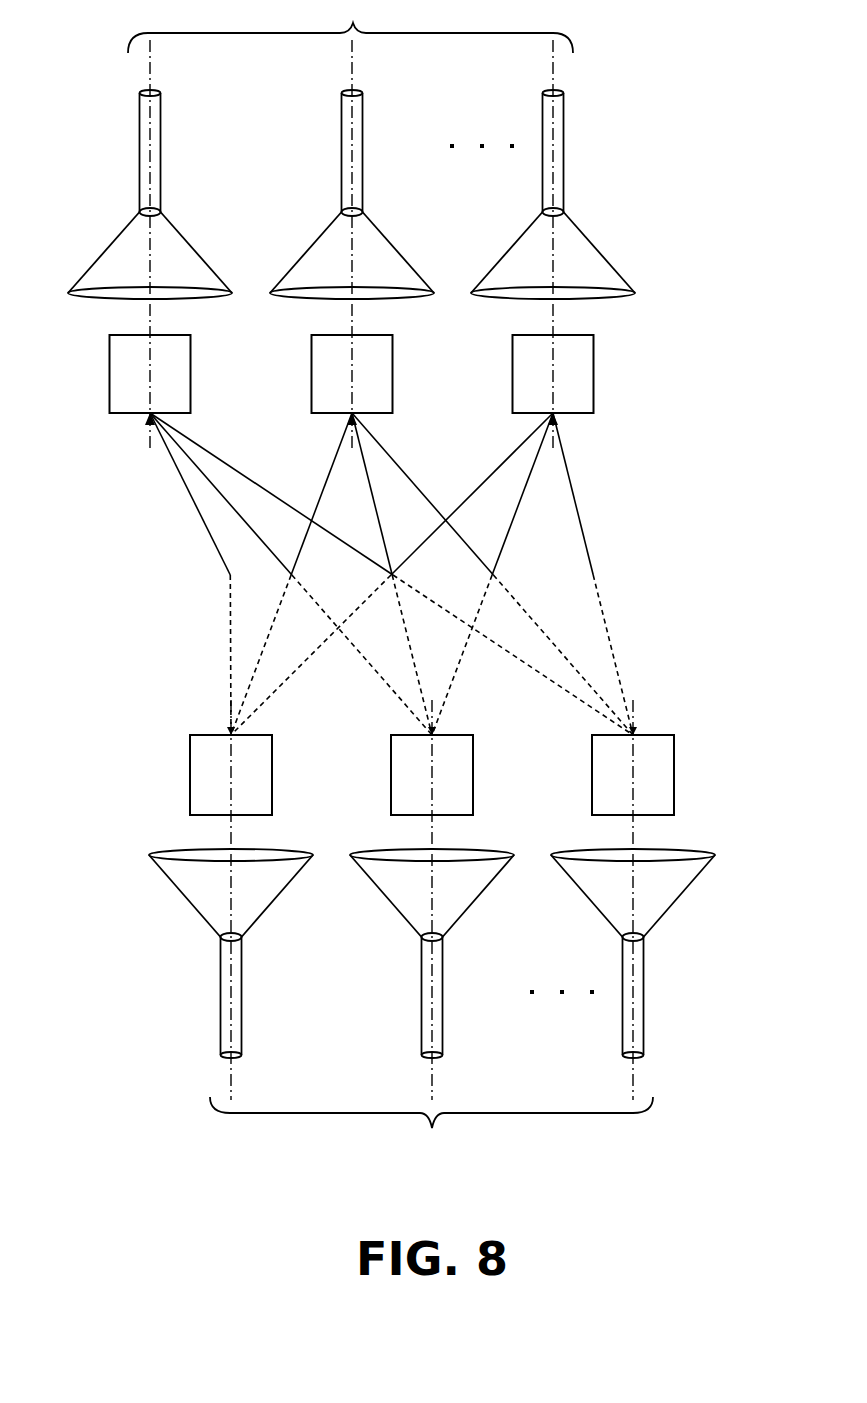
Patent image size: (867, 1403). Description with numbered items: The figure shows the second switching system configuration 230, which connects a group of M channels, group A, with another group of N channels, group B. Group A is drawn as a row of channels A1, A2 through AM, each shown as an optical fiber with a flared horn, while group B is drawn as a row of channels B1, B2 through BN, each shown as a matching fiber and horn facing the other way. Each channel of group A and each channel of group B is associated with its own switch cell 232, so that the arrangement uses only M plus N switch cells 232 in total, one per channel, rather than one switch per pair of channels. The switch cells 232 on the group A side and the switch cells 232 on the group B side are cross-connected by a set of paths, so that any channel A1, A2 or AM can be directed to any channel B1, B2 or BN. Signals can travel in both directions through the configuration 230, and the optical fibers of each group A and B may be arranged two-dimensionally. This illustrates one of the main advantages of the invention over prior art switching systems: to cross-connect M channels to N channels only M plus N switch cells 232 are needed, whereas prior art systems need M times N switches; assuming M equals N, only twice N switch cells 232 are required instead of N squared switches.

The second switching system configuration 230 is at (673, 387).
The switch cell 232 is at (109, 373).
The group A is at (350, 26).
The group B is at (431, 1131).
The input port A1 is at (150, 194).
The input port A2 is at (352, 194).
The input port AM is at (553, 194).
The output port B1 is at (231, 953).
The output port B2 is at (432, 953).
The output port BN is at (633, 953).